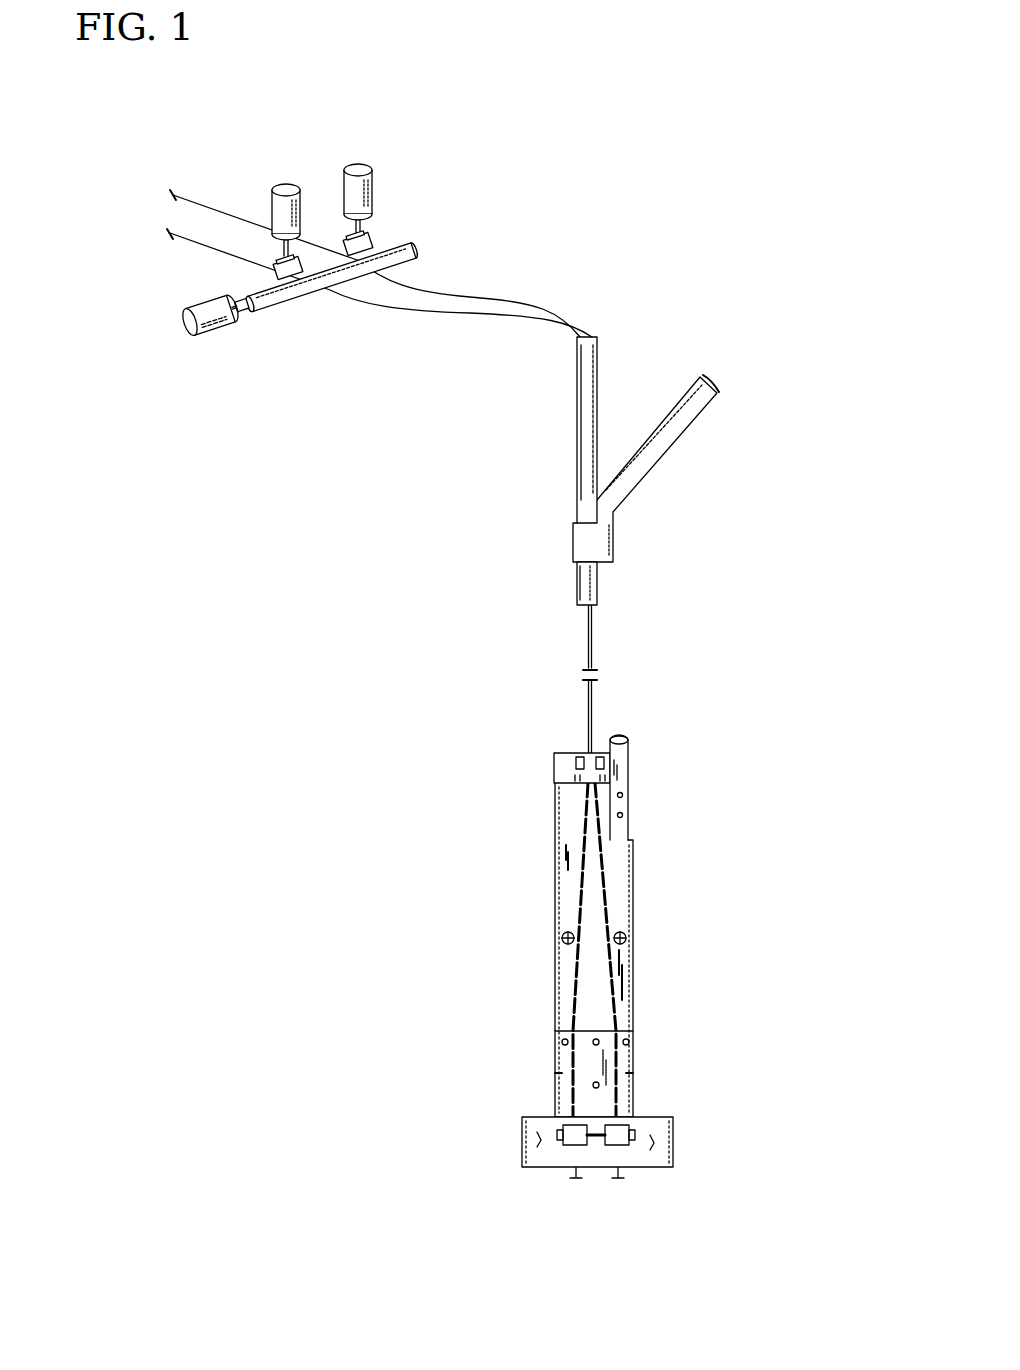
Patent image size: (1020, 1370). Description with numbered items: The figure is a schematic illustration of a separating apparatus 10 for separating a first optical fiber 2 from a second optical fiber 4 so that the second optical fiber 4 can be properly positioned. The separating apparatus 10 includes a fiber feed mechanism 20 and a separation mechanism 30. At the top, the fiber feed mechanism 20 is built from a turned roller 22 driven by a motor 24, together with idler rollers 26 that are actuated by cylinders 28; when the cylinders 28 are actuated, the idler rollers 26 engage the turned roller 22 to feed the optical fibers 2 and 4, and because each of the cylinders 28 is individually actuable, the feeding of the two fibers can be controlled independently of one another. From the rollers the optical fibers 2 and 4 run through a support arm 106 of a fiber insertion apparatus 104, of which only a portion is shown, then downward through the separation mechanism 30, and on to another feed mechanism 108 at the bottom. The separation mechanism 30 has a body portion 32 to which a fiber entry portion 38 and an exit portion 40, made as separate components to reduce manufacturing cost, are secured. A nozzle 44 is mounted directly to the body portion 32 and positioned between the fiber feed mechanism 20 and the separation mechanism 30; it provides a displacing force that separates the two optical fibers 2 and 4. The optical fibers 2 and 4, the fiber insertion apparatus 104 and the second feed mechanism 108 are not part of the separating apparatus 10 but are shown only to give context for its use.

The separating apparatus 10 is at (728, 140).
The fiber feed mechanism 20 is at (418, 150).
The first optical fiber 2 is at (495, 294).
The second optical fiber 4 is at (415, 316).
The turned roller 22 is at (298, 312).
The motor 24 is at (214, 336).
The idler rollers 26 is at (382, 240).
The cylinders 28 is at (303, 202).
The fiber insertion apparatus 104 is at (645, 362).
The support arm 106 is at (577, 440).
The separation mechanism 30 is at (760, 912).
The body portion 32 is at (634, 903).
The fiber entry portion 38 is at (554, 766).
The exit portion 40 is at (634, 1052).
The nozzle 44 is at (621, 736).
The second feed mechanism 108 is at (664, 1140).